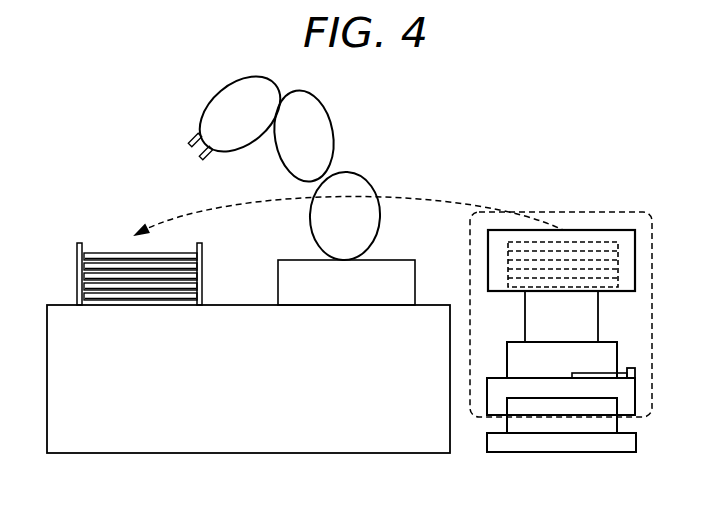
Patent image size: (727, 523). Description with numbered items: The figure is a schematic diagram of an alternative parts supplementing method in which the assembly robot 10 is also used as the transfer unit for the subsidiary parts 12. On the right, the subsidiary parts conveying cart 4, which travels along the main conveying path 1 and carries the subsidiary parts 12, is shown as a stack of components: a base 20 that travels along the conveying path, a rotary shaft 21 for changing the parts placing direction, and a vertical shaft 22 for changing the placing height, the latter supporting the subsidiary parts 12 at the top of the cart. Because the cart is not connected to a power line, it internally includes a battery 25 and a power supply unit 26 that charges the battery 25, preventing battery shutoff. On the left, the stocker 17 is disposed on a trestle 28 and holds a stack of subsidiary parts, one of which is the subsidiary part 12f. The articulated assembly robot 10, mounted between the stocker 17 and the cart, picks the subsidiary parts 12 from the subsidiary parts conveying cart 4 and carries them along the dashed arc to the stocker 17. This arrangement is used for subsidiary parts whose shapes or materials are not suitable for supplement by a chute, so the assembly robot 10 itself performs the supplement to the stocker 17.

The main conveying path 1 is at (570, 412).
The subsidiary parts conveying cart 4 is at (572, 212).
The assembly robot 10 is at (320, 122).
The subsidiary parts 12 is at (597, 243).
The subsidiary part 12f is at (190, 285).
The stocker 17 is at (103, 247).
The base 20 is at (630, 405).
The rotary shaft 21 is at (610, 353).
The vertical shaft 22 is at (590, 305).
The battery 25 is at (608, 378).
The power supply unit 26 is at (635, 371).
The trestle 28 is at (380, 440).